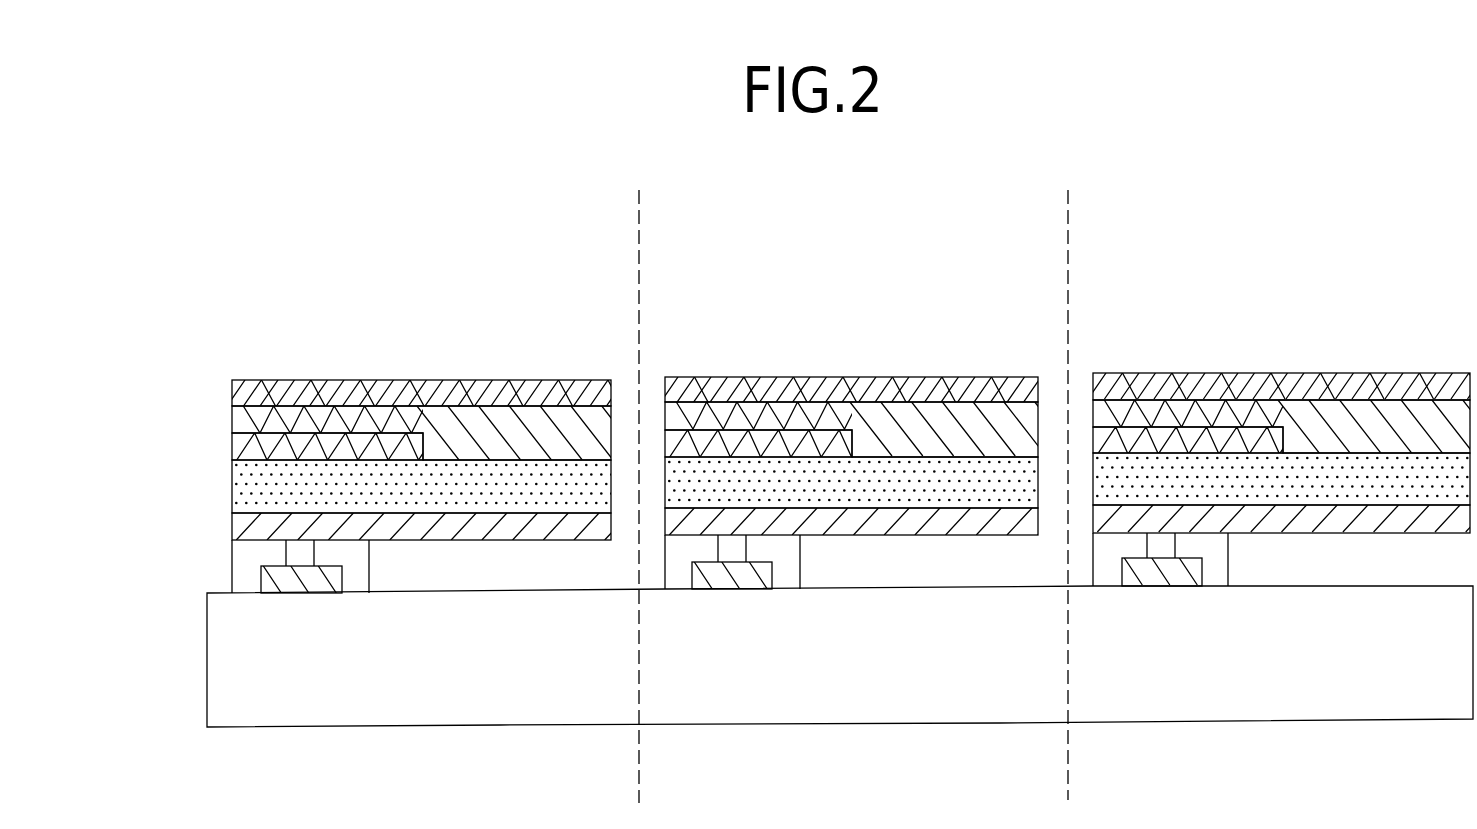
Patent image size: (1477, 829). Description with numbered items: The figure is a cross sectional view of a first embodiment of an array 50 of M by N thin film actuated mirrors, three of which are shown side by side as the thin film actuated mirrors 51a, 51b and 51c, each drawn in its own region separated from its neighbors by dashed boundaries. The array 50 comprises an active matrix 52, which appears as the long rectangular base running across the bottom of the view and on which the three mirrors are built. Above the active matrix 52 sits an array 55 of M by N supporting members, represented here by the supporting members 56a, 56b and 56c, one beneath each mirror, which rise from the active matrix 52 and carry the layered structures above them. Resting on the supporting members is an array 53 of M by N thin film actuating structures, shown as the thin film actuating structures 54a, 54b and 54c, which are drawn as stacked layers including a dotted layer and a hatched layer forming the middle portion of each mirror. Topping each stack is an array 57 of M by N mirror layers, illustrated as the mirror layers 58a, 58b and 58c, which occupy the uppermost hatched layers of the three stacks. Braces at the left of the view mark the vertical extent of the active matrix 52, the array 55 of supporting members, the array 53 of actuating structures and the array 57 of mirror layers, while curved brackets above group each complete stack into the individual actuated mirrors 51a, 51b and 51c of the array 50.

The array of M×N thin film actuated mirrors 50 is at (1182, 175).
The thin film actuated mirror 51a is at (612, 270).
The thin film actuated mirror 51b is at (1038, 265).
The thin film actuated mirror 51c is at (1473, 267).
The active matrix 52 is at (193, 592).
The array of M×N thin film actuating structures 53 is at (209, 447).
The thin film actuating structure 54a is at (385, 488).
The thin film actuating structure 54b is at (815, 487).
The thin film actuating structure 54c is at (1240, 483).
The array of M×N supporting members 55 is at (222, 543).
The supporting member 56a is at (355, 557).
The supporting member 56b is at (785, 555).
The supporting member 56c is at (1208, 550).
The array of M×N mirror layers 57 is at (207, 380).
The mirror layer 58a is at (462, 442).
The mirror layer 58b is at (888, 437).
The mirror layer 58c is at (1315, 435).